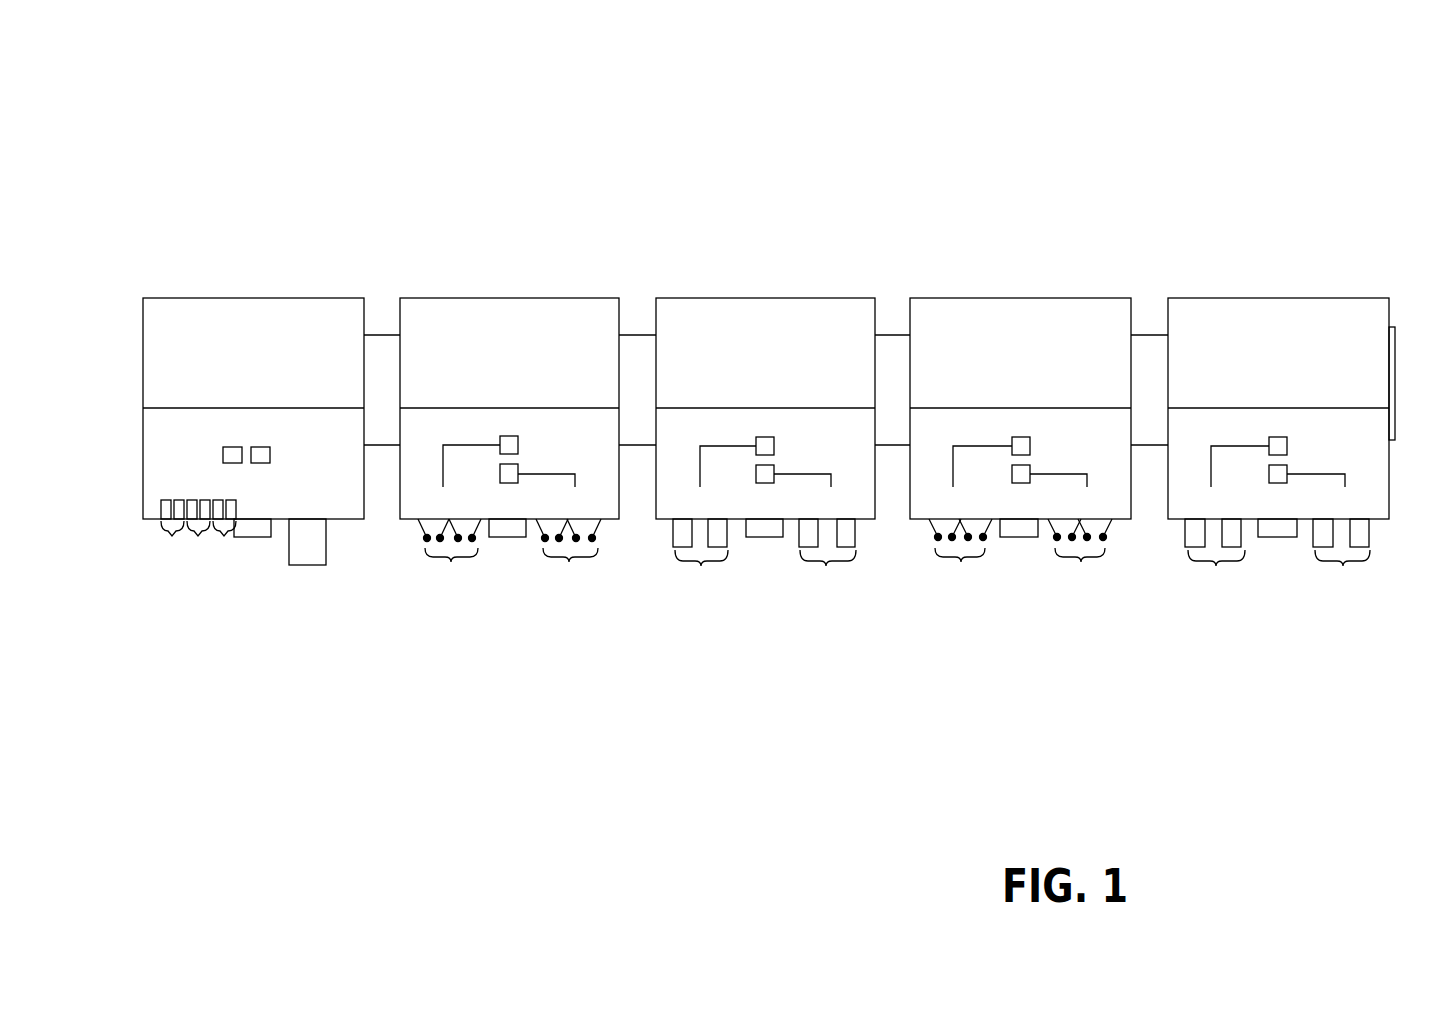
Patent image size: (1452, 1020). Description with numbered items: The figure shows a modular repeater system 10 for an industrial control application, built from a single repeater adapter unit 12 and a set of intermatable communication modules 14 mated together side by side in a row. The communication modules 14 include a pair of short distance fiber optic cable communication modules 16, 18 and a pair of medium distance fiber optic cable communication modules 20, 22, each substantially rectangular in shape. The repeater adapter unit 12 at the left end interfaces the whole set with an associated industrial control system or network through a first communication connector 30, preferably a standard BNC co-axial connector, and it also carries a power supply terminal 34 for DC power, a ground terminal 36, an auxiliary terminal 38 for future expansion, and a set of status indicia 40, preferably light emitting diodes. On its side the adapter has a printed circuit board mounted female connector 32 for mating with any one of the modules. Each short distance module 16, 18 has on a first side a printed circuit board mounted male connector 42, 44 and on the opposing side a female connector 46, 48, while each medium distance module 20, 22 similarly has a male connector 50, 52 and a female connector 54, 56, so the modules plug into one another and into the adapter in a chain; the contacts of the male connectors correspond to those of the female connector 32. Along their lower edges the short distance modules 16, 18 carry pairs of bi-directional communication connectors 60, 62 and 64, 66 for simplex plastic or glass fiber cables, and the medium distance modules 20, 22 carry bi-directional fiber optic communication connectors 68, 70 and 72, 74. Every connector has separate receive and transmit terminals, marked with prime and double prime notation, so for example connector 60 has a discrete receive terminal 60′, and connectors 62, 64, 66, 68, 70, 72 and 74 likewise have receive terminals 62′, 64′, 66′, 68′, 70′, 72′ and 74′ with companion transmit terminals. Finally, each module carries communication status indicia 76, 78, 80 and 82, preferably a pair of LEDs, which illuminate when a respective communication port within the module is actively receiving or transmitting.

The modular repeater system 10 is at (840, 128).
The repeater adapter unit 12 is at (201, 277).
The communication modules 14 is at (511, 276).
The short distance fiber optic cable communication module 16 is at (413, 298).
The short distance fiber optic cable communication module 18 is at (922, 298).
The medium distance fiber optic cable communication module 20 is at (667, 298).
The medium distance fiber optic cable communication module 22 is at (1313, 298).
The first communication connector 30 is at (306, 565).
The female connector 32 is at (372, 335).
The power supply terminal 34 is at (172, 545).
The ground terminal 36 is at (200, 545).
The auxiliary terminal 38 is at (228, 545).
The status indicia 40 is at (246, 437).
The male connector 42 is at (384, 306).
The male connector 44 is at (896, 306).
The female connector 46 is at (627, 335).
The female connector 48 is at (1140, 335).
The male connector 50 is at (641, 306).
The male connector 52 is at (1151, 306).
The female connector 54 is at (884, 335).
The female connector 56 is at (1395, 327).
The bi-directional communication connector 60 is at (462, 642).
The receive terminal 60′ is at (417, 535).
The bi-directional communication connector 62 is at (572, 642).
The receive terminal 62′ is at (533, 540).
The bi-directional communication connector 64 is at (975, 642).
The receive terminal 64′ is at (920, 530).
The bi-directional communication connector 66 is at (1083, 642).
The receive terminal 66′ is at (1049, 535).
The bi-directional fiber optic communication connector 68 is at (708, 642).
The receive terminal 68′ is at (666, 539).
The bi-directional fiber optic communication connector 70 is at (820, 642).
The receive terminal 70′ is at (796, 544).
The bi-directional fiber optic communication connector 72 is at (1222, 642).
The receive terminal 72′ is at (1181, 539).
The bi-directional fiber optic communication connector 74 is at (1332, 642).
The receive terminal 74′ is at (1306, 542).
The communication status indicia 76 is at (511, 426).
The communication status indicia 78 is at (767, 426).
The communication status indicia 80 is at (1020, 426).
The communication status indicia 82 is at (1277, 426).